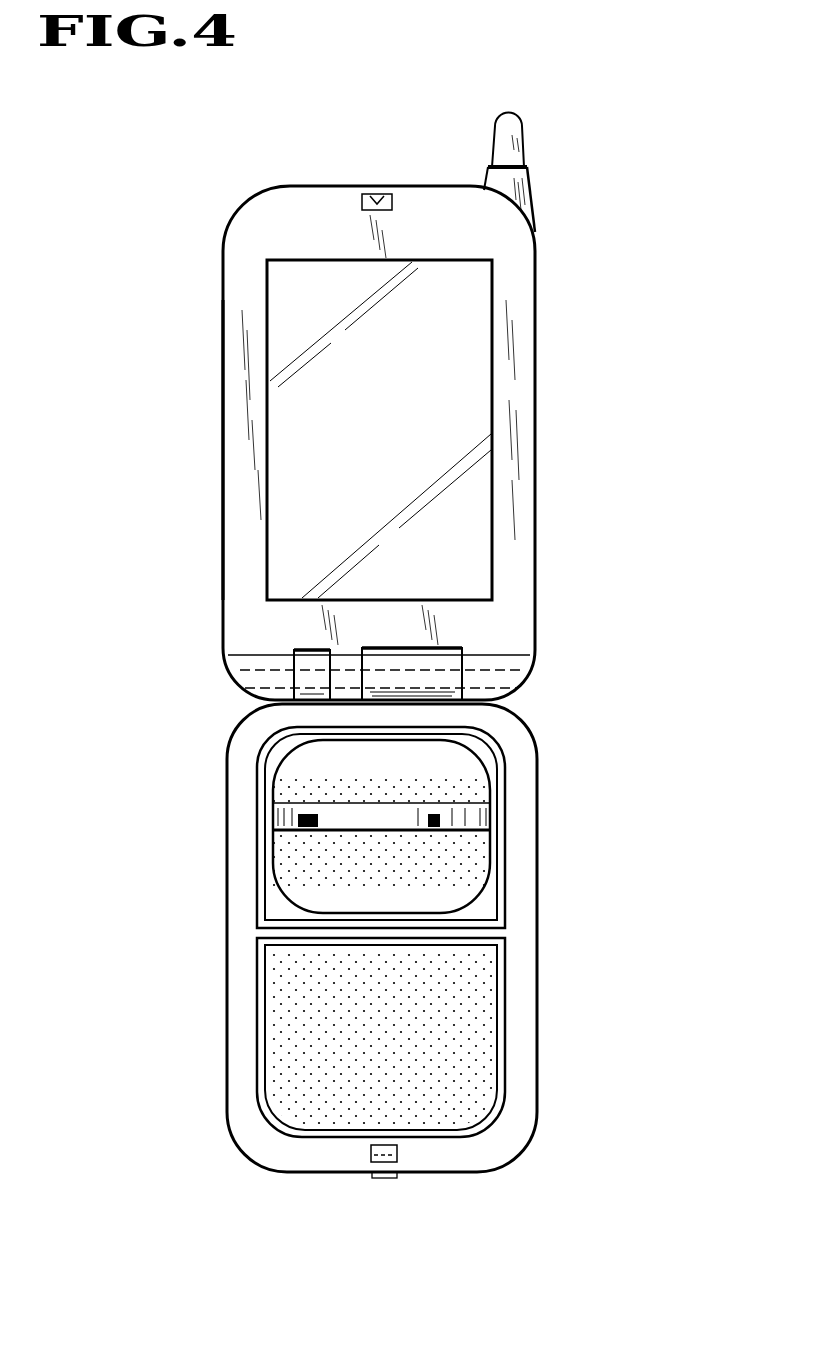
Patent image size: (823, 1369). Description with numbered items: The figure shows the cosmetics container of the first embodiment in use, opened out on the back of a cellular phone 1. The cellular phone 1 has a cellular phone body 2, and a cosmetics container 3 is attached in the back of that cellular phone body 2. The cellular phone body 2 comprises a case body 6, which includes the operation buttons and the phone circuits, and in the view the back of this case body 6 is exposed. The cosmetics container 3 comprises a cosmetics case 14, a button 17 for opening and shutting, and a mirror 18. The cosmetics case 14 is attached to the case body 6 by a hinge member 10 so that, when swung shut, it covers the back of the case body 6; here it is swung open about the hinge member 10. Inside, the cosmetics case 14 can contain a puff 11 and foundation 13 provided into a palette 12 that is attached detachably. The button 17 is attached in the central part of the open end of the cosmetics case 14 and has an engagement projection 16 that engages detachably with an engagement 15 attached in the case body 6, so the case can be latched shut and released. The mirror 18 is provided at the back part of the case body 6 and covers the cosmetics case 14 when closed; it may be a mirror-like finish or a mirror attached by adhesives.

The cellular phone 1 is at (630, 173).
The cellular phone body 2 is at (538, 372).
The cosmetics container 3 is at (539, 928).
The case body 6 is at (233, 441).
The hinge member 10 is at (470, 680).
The puff 11 is at (482, 852).
The palette 12 is at (508, 1070).
The foundation 13 is at (470, 1023).
The cosmetics case 14 is at (235, 1004).
The engagement 15 is at (380, 194).
The engagement projection 16 is at (400, 1155).
The button 17 is at (381, 1178).
The mirror 18 is at (482, 505).